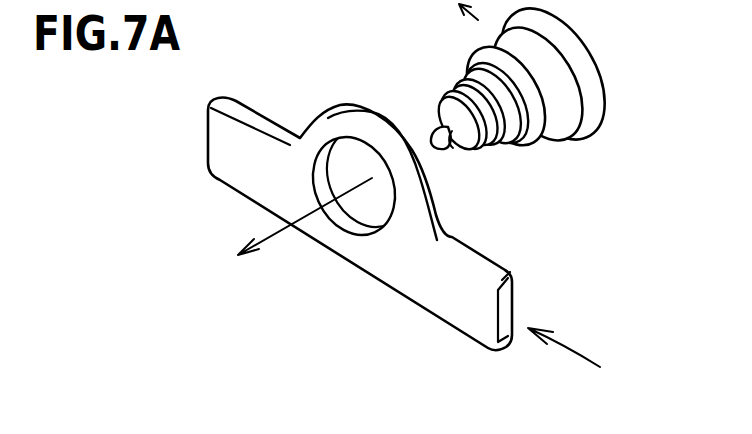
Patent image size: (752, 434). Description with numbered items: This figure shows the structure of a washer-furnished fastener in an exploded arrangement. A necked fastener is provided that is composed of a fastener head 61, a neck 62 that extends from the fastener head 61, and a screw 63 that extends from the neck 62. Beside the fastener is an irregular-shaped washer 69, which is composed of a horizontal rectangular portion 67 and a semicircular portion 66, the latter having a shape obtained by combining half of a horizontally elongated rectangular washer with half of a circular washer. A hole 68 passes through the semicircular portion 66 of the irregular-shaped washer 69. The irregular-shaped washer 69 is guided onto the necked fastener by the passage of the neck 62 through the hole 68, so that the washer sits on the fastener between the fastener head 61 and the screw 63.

The fastener head 61 is at (603, 63).
The neck 62 is at (560, 97).
The screw 63 is at (502, 148).
The semicircular portion 66 is at (327, 128).
The horizontal rectangular portion 67 is at (257, 183).
The hole 68 is at (355, 223).
The irregular-shaped washer 69 is at (584, 361).